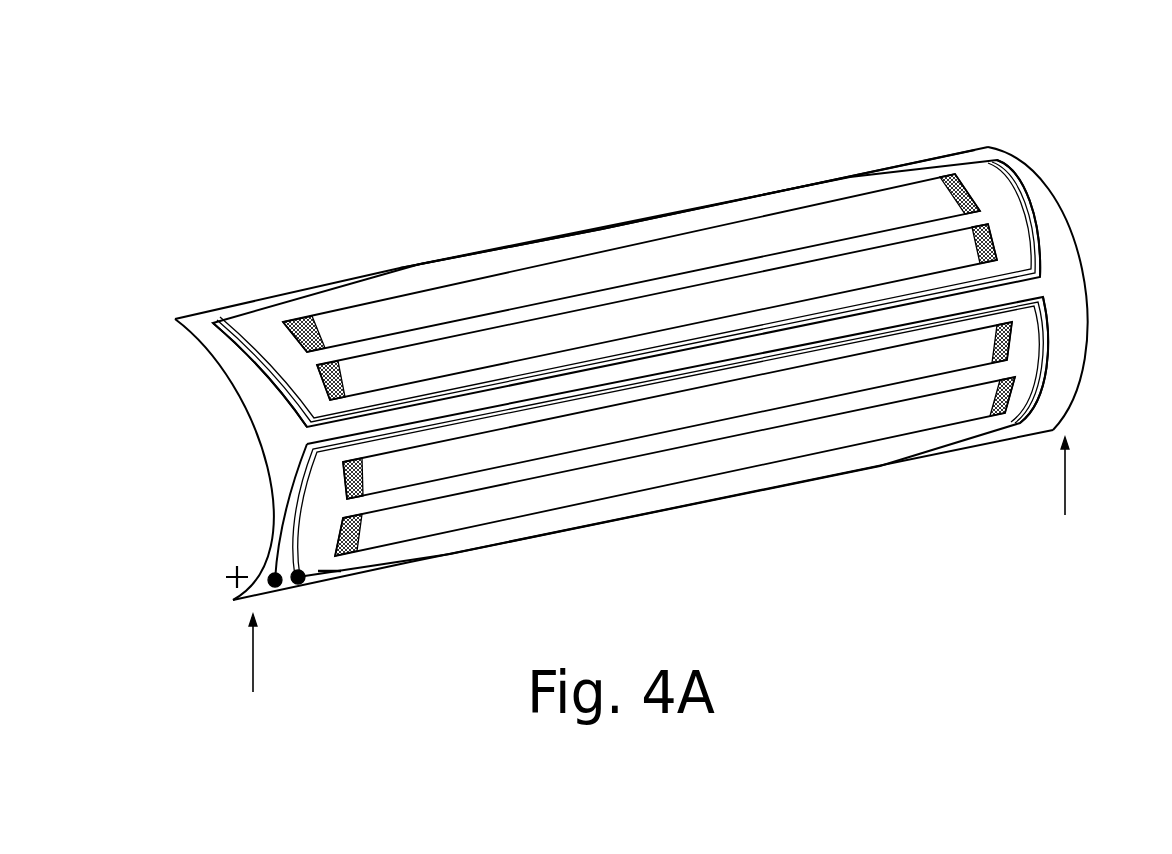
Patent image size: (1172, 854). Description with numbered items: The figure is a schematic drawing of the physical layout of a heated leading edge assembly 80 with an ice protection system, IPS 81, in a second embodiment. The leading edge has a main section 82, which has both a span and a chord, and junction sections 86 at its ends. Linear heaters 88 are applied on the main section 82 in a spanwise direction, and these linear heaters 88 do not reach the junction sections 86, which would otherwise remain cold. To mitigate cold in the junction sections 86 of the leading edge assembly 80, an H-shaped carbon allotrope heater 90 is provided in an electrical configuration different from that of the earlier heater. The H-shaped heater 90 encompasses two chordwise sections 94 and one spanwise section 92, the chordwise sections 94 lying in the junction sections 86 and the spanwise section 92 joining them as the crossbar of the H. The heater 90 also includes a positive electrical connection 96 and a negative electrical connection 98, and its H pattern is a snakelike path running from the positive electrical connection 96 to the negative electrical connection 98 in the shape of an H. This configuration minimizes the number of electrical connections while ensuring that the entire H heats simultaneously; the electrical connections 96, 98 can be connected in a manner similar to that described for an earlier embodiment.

The heated leading edge assembly 80 is at (746, 104).
The IPS 81 is at (431, 262).
The main section 82 is at (610, 226).
The junction sections 86 is at (659, 584).
The linear heaters 88 is at (848, 215).
The H-shaped heater 90 is at (1045, 277).
The spanwise section 92 is at (676, 345).
The chordwise sections 94 is at (1027, 193).
The positive electrical connection 96 is at (272, 574).
The negative electrical connection 98 is at (300, 585).